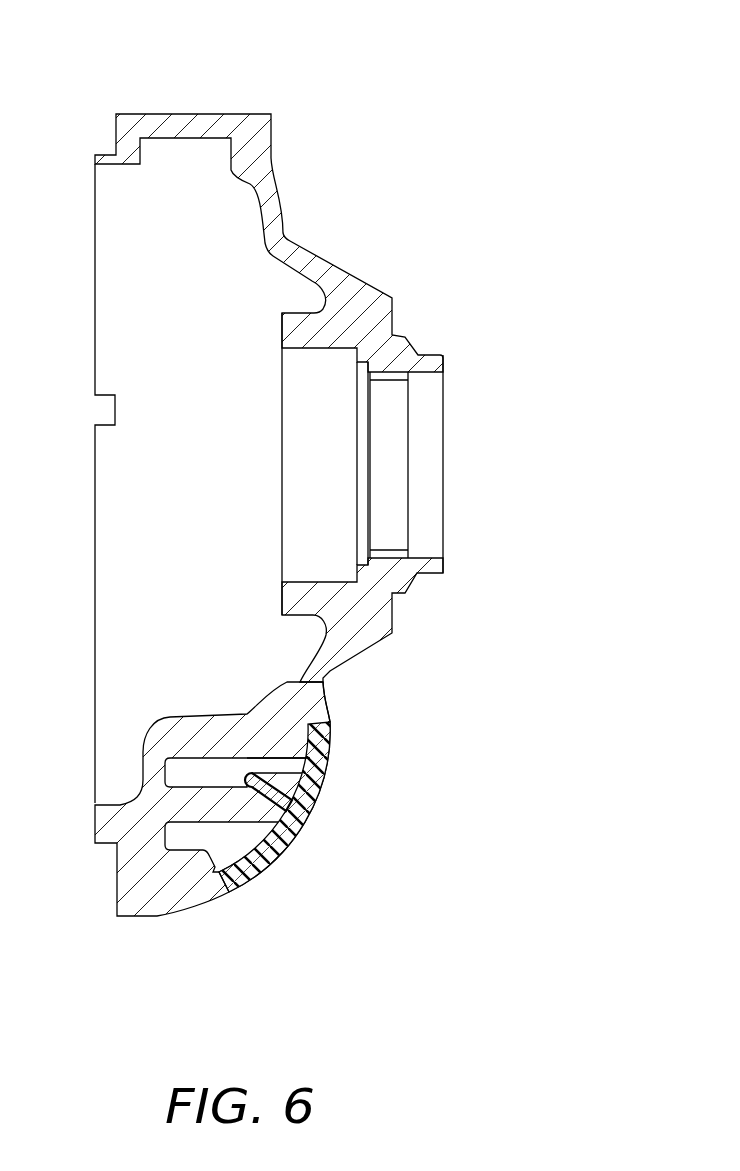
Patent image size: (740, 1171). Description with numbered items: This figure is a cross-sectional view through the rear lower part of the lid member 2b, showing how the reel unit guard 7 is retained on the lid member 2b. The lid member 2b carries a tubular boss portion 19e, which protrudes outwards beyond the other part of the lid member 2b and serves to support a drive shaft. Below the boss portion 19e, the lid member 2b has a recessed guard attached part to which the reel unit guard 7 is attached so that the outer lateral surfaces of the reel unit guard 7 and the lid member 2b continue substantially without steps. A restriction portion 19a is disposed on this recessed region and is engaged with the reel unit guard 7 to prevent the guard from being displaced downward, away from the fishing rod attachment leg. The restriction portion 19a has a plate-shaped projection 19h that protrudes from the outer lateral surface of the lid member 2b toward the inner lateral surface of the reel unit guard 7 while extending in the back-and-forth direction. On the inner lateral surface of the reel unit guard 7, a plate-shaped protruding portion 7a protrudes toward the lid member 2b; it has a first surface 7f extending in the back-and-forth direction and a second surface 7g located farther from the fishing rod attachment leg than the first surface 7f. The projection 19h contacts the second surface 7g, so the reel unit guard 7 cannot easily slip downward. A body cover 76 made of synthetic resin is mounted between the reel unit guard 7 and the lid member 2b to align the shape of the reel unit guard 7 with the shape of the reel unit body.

The lid member 2b is at (352, 182).
The boss portion 19e is at (423, 362).
The restriction portion 19a is at (222, 770).
The projection 19h is at (258, 805).
The reel unit guard 7 is at (341, 758).
The protruding portion 7a is at (333, 719).
The first surface 7f is at (276, 758).
The second surface 7g is at (278, 790).
The body cover 76 is at (238, 882).